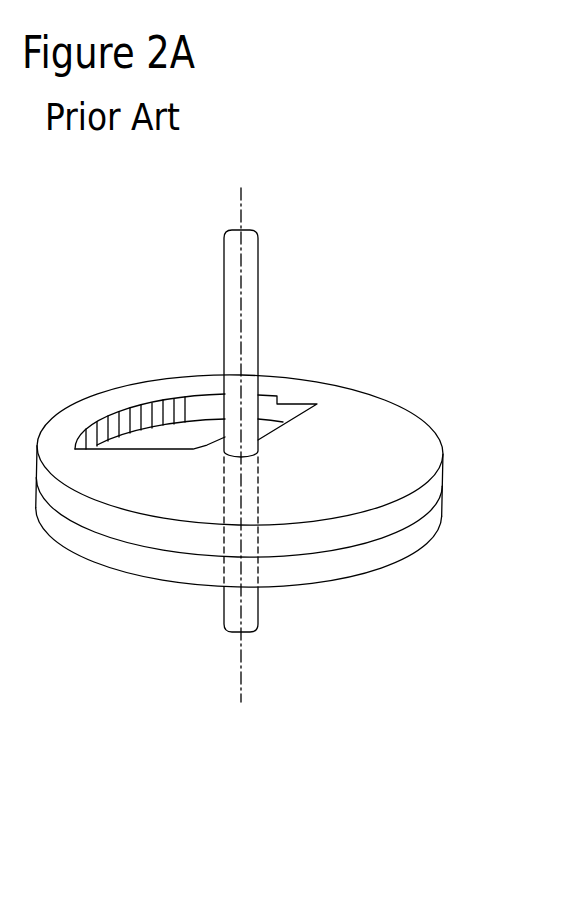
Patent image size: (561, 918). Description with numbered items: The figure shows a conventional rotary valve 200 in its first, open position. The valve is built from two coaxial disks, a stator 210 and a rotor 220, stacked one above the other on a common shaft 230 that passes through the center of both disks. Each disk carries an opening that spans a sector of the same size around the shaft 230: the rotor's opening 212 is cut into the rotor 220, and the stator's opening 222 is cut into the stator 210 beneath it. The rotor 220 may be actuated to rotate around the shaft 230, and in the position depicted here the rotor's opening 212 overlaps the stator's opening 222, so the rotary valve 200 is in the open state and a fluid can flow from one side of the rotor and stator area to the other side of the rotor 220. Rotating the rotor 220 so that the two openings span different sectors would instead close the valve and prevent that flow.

The rotary valve 200 is at (432, 340).
The stator 210 is at (432, 512).
The rotor 220 is at (436, 480).
The rotor's opening 212 is at (156, 425).
The stator's opening 222 is at (277, 381).
The shaft 230 is at (250, 271).